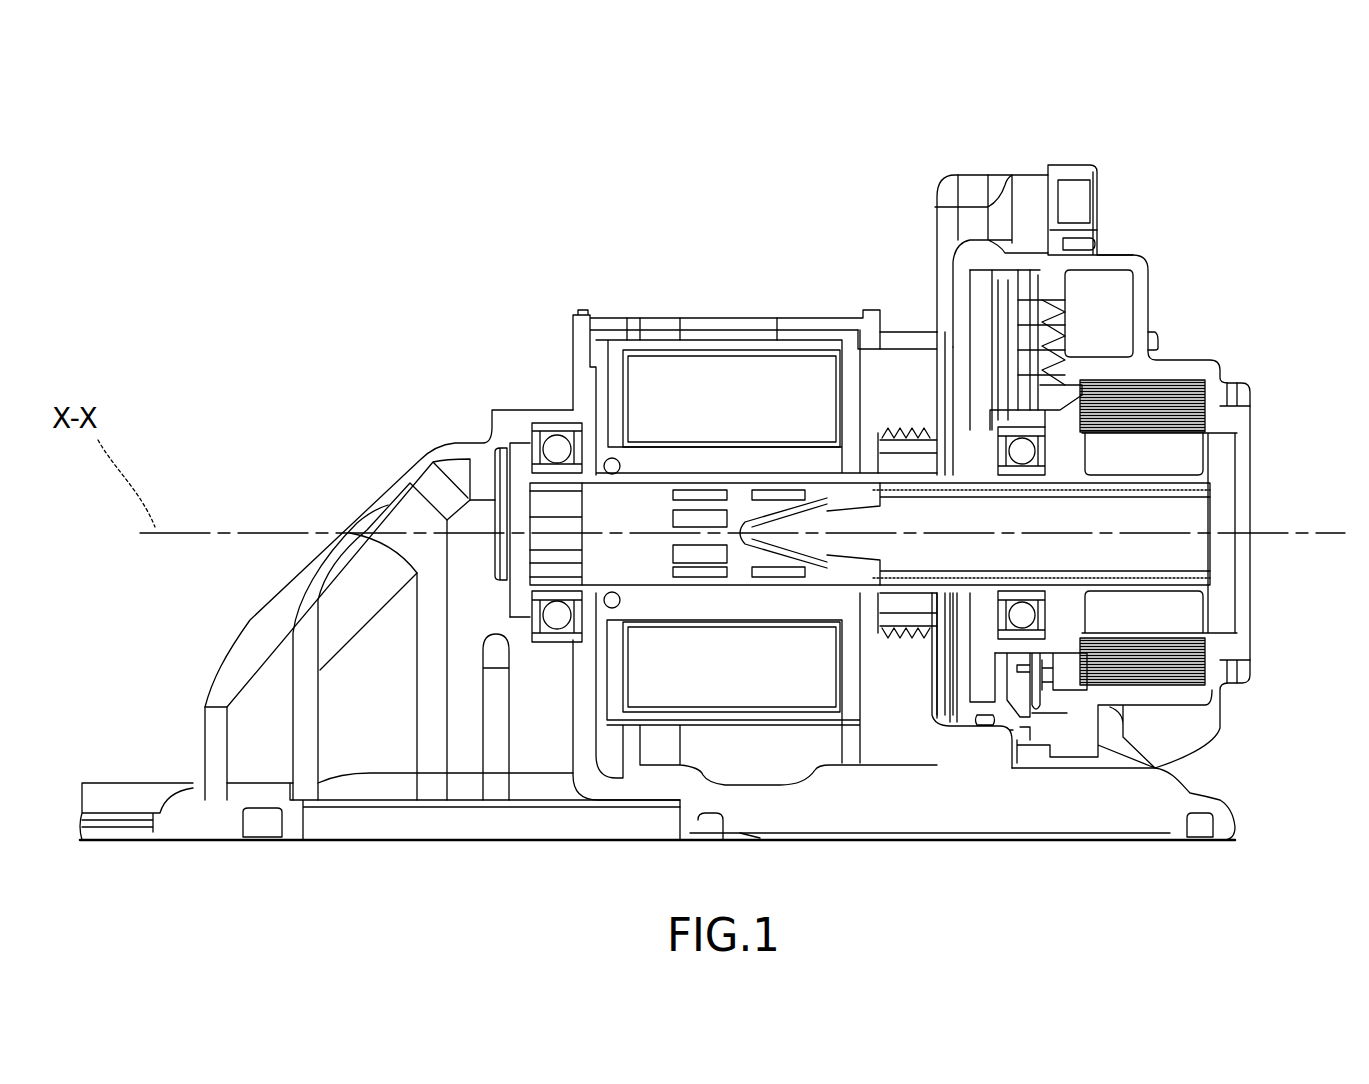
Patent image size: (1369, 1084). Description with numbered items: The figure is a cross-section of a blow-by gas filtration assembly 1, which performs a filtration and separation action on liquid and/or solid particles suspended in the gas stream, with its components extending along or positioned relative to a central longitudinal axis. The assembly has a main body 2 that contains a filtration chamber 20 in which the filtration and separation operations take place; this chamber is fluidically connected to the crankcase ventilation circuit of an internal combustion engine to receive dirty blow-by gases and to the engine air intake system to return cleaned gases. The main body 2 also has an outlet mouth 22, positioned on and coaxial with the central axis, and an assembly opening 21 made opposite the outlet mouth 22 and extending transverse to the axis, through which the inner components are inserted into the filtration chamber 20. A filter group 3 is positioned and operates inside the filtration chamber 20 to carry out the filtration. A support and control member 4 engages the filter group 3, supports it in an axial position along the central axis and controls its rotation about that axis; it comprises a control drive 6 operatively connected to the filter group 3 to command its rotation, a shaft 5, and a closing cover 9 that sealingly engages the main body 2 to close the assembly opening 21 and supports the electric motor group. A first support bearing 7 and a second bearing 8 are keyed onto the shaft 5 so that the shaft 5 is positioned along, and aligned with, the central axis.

The blow-by gas filtration assembly 1 is at (150, 245).
The main body 2 is at (458, 383).
The filter group 3 is at (871, 372).
The support and control member 4 is at (1223, 337).
The shaft 5 is at (1220, 480).
The control drive 6 is at (1093, 347).
The first support bearing 7 is at (557, 420).
The second bearing 8 is at (1005, 413).
The closing cover 9 is at (1028, 156).
The filtration chamber 20 is at (597, 346).
The assembly opening 21 is at (964, 275).
The outlet mouth 22 is at (517, 480).